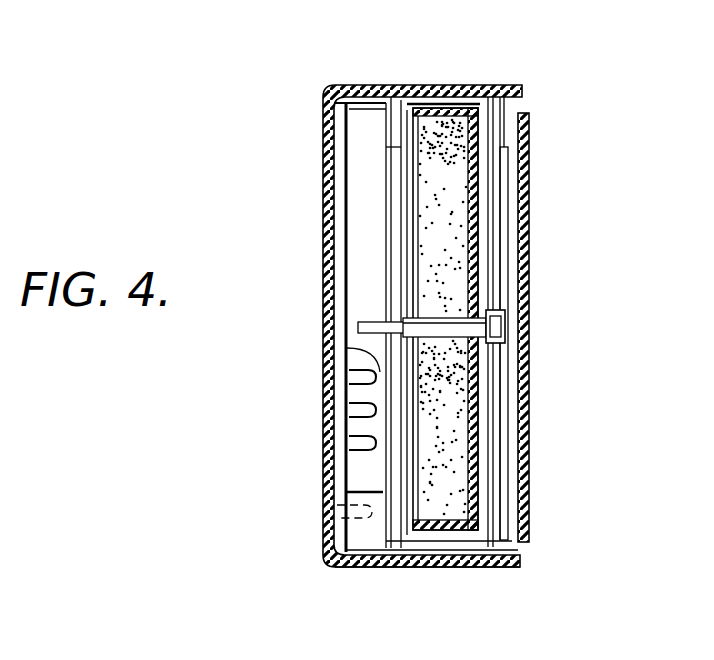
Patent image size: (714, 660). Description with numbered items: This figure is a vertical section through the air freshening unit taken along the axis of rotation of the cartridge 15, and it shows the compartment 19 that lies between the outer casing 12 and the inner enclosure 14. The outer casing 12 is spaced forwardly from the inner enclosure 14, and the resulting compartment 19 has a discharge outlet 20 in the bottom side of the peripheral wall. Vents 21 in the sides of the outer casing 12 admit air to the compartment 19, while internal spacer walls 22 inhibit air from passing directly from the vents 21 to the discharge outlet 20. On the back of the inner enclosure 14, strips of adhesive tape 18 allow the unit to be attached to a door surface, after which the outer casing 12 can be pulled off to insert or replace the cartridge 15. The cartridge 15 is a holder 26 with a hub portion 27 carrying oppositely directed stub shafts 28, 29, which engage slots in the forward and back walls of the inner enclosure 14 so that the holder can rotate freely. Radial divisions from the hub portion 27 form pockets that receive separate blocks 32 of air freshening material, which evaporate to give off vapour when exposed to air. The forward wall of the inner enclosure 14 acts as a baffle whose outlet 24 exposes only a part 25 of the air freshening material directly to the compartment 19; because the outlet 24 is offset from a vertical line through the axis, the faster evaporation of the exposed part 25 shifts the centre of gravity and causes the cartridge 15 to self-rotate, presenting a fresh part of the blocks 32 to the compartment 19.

The outer casing 12 is at (323, 150).
The inner enclosure 14 is at (508, 113).
The cartridge 15 is at (437, 110).
The strips of adhesive tape 18 is at (530, 140).
The compartment 19 is at (347, 348).
The discharge outlet 20 is at (343, 569).
The vents 21 is at (346, 446).
The internal spacer walls 22 is at (345, 528).
The outlet 24 is at (398, 506).
The exposed part of the air freshening material 25 is at (412, 471).
The holder 26 is at (463, 100).
The hub portion 27 is at (490, 312).
The stub shaft 28 is at (360, 322).
The stub shaft 29 is at (505, 332).
The blocks of air freshening material 32 is at (452, 230).